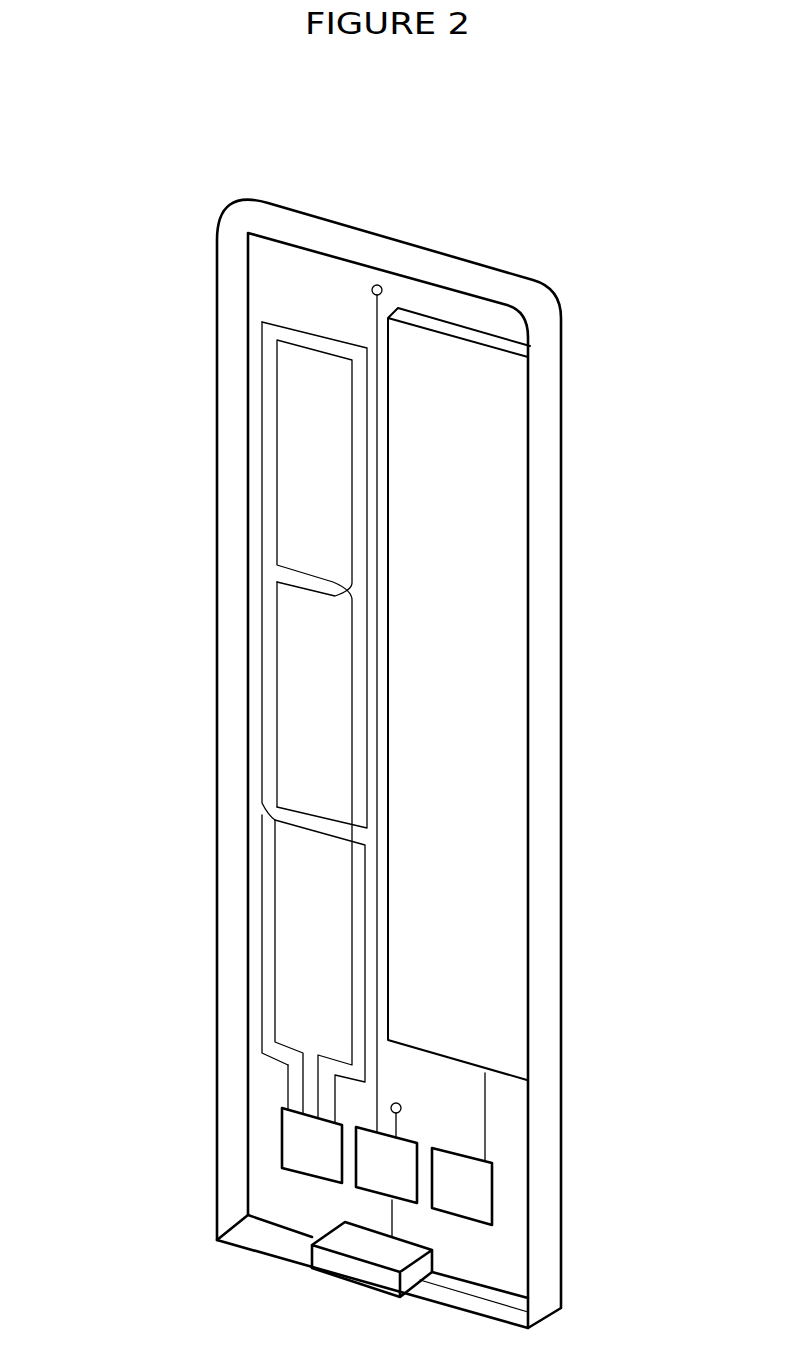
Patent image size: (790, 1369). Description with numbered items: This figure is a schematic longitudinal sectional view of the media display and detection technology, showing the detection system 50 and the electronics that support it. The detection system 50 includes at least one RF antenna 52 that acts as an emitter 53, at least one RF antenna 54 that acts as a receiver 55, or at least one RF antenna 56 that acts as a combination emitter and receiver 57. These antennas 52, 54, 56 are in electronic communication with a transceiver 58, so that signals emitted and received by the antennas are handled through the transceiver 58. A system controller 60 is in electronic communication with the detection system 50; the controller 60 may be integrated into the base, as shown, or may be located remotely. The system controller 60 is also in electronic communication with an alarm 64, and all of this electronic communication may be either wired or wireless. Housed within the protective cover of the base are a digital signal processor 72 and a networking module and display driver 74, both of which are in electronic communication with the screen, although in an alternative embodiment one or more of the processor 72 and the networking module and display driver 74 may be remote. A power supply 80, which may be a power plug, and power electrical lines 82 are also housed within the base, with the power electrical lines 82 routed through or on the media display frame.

The power electrical lines 82 is at (277, 500).
The RF antenna 52 is at (277, 532).
The emitter 53 is at (277, 562).
The RF antenna 54 is at (277, 588).
The receiver 55 is at (277, 620).
The RF antenna 56 is at (277, 652).
The combination emitter and receiver 57 is at (277, 680).
The transceiver 58 is at (298, 1128).
The detection system 50 is at (298, 1143).
The alarm 64 is at (297, 1158).
The system controller 60 is at (405, 1155).
The digital signal processor 72 is at (403, 1183).
The networking module and display driver 74 is at (478, 1195).
The power supply 80 is at (353, 1235).